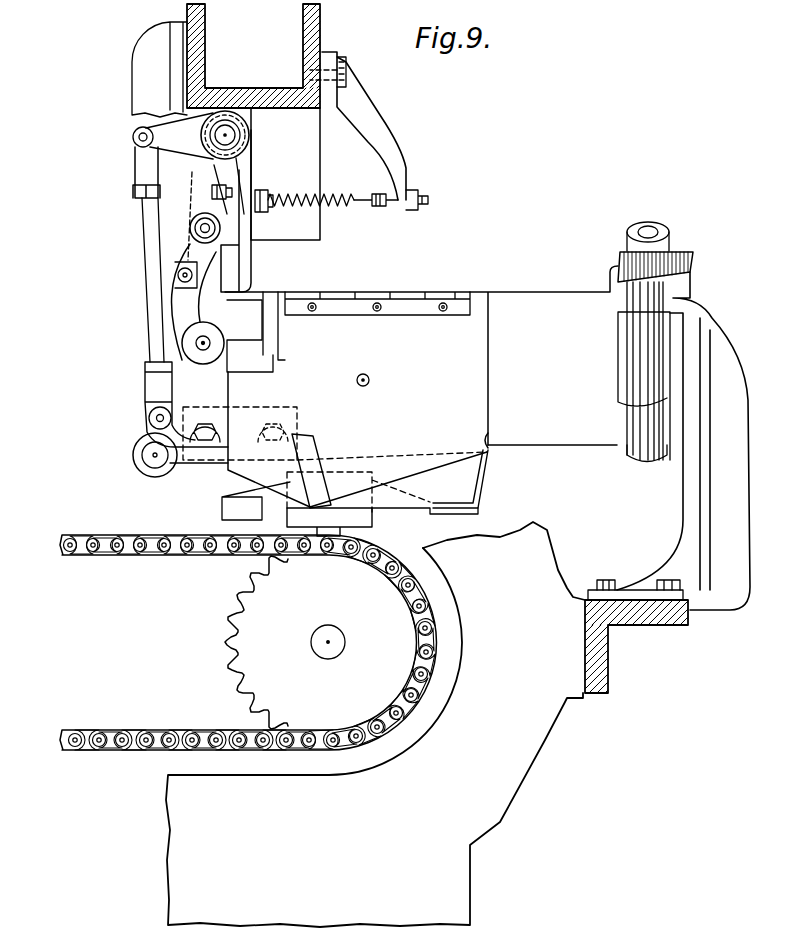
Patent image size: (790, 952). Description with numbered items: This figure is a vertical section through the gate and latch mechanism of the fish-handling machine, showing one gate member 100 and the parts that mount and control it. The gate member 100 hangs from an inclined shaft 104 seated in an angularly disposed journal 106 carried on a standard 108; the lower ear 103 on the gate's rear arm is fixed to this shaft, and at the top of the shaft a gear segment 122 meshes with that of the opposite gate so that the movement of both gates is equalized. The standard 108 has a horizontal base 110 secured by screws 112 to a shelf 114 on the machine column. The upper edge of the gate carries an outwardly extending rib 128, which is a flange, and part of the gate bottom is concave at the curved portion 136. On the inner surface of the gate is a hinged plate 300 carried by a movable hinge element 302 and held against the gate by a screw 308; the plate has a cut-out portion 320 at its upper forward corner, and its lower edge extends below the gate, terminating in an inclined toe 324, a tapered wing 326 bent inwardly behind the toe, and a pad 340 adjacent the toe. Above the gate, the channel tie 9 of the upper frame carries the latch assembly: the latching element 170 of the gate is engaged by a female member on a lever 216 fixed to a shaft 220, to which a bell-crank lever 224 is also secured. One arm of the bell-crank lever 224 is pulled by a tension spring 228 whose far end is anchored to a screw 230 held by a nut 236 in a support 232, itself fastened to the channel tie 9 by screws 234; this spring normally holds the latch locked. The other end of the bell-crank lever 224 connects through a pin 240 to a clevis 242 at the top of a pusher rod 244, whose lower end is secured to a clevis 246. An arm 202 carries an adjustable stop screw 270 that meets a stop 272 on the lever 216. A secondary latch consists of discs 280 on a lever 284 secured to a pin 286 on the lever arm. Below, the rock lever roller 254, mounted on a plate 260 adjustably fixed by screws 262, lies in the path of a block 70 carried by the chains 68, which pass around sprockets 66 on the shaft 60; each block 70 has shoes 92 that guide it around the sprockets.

The channel tie 9 is at (320, 29).
The screws 234 is at (348, 76).
The support 232 is at (383, 130).
The pin 240 is at (133, 137).
The bell-crank lever 224 is at (179, 136).
The shaft 220 is at (236, 137).
The clevis 242 is at (137, 167).
The pusher rod 244 is at (146, 238).
The adjustable stop screw 270 is at (268, 196).
The stop 272 is at (212, 192).
The lever 216 is at (200, 219).
The arm 202 is at (252, 252).
The tension spring 228 is at (312, 212).
The screw 230 is at (376, 212).
The nut 236 is at (415, 208).
The pin 286 is at (177, 276).
The lever 284 is at (176, 313).
The discs 280 is at (203, 362).
The latching element 170 is at (246, 300).
The cut-out portion 320 is at (280, 331).
The movable hinge element 302 is at (388, 292).
The hinged plate 300 is at (488, 365).
The gate member 100 is at (536, 291).
The rib 128 is at (562, 438).
The curved portion 136 is at (398, 456).
The shaft 104 is at (655, 233).
The gear segment 122 is at (690, 268).
The journal 106 is at (640, 368).
The ear 103 is at (647, 462).
The standard 108 is at (728, 358).
The screw 308 is at (360, 391).
The clevis 246 is at (145, 389).
The roller 254 is at (152, 471).
The plate 260 is at (215, 412).
The screws 262 is at (205, 428).
The pad 340 is at (228, 470).
The inclined toe 324 is at (262, 510).
The tapered wing 326 is at (480, 495).
The shoes 92 is at (430, 514).
The block 70 is at (380, 521).
The chains 68 is at (130, 536).
The sprockets 66 is at (258, 647).
The shaft 60 is at (340, 645).
The shelf 114 is at (632, 626).
The base 110 is at (633, 590).
The screws 112 is at (606, 580).